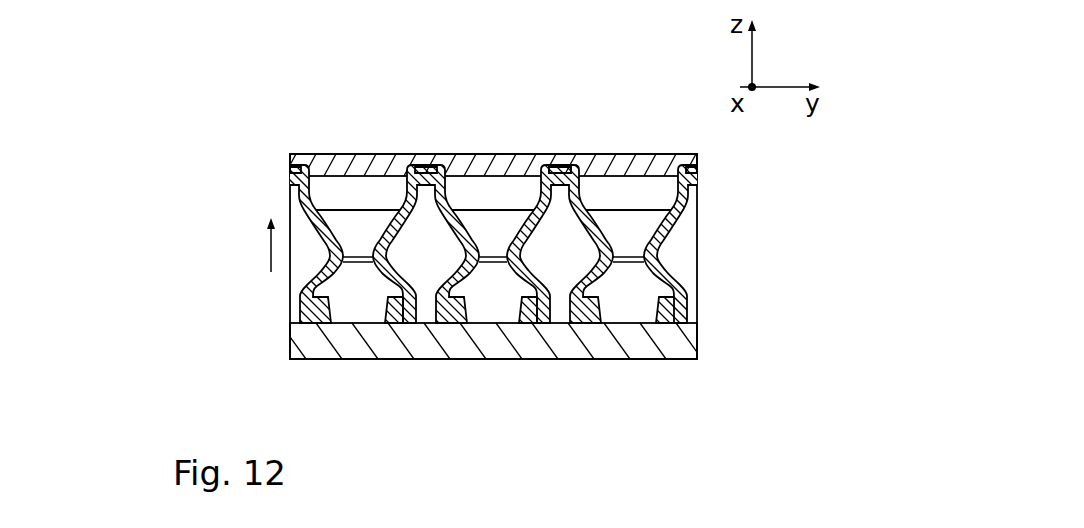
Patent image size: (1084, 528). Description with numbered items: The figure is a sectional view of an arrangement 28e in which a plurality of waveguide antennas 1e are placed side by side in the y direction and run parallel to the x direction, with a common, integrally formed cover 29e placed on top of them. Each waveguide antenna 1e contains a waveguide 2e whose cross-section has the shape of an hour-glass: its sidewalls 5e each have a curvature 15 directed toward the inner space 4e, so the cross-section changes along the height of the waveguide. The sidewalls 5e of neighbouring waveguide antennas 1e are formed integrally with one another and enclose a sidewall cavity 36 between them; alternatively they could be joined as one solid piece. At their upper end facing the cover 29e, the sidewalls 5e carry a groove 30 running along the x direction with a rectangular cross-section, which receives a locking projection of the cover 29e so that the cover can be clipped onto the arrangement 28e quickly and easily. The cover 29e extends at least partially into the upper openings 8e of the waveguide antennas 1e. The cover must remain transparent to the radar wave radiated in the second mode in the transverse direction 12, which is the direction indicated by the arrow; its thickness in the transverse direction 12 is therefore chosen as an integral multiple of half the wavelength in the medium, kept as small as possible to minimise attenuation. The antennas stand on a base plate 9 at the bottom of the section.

The waveguide antenna 1e is at (382, 139).
The waveguide 2e is at (286, 199).
The inner space 4e is at (350, 292).
The sidewall 5e is at (298, 280).
The upper opening 8e is at (326, 180).
The base plate 9 is at (585, 348).
The transverse direction 12 is at (271, 250).
The curvature 15 is at (372, 238).
The arrangement 28e is at (557, 122).
The cover 29e is at (469, 160).
The groove 30 is at (563, 165).
The sidewall cavity 36 is at (426, 280).